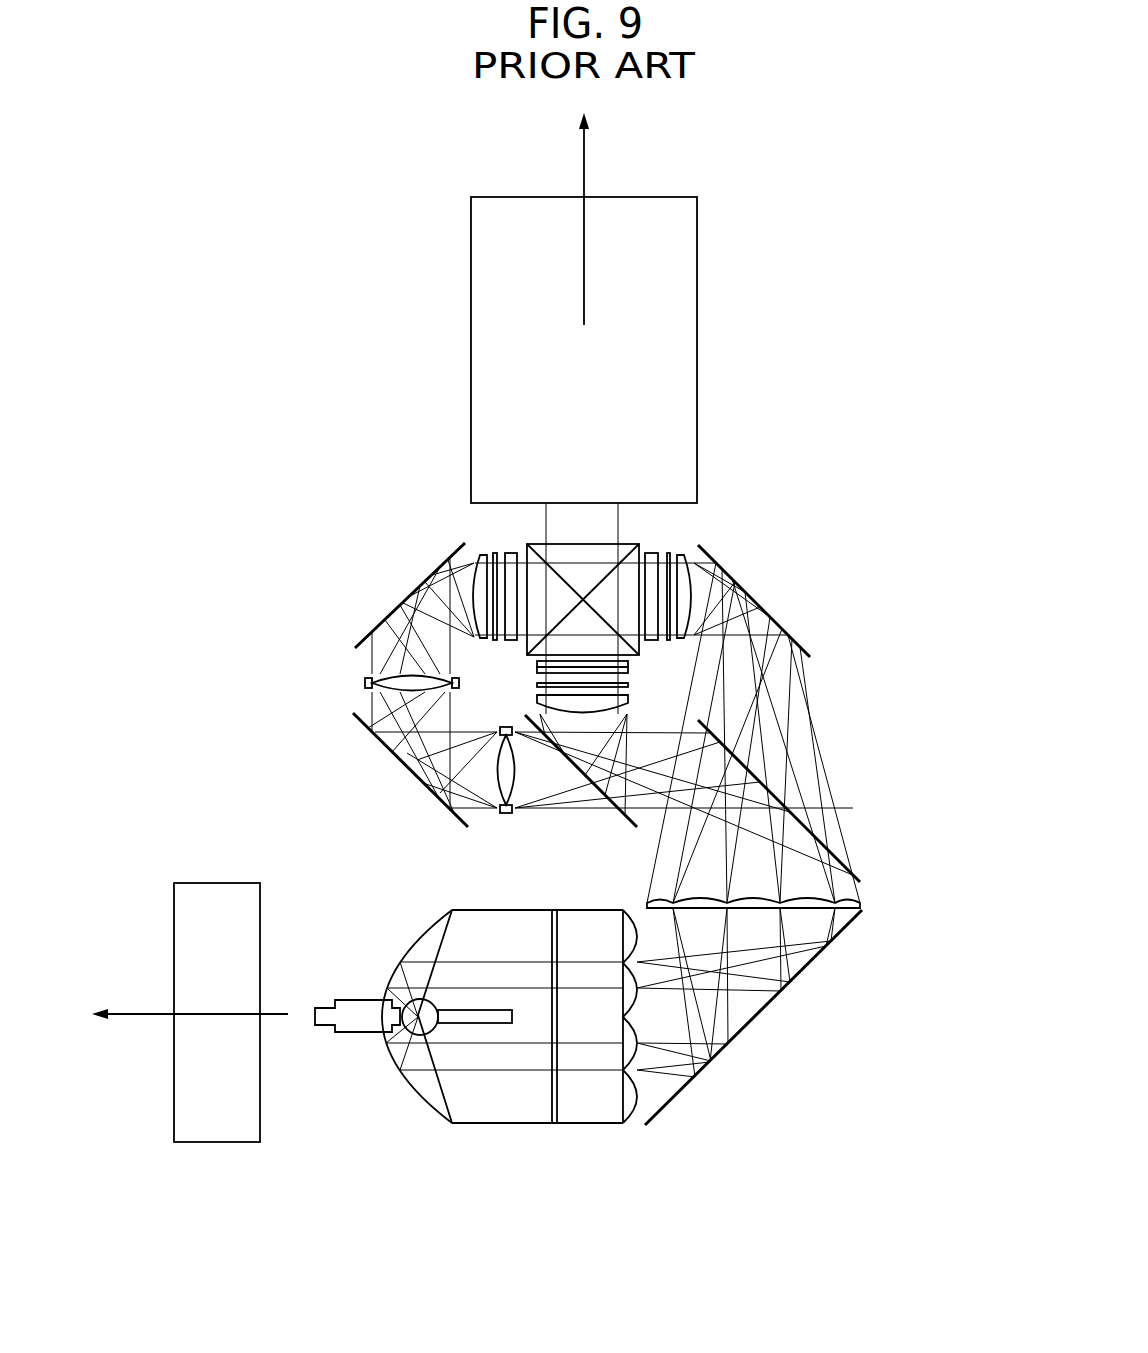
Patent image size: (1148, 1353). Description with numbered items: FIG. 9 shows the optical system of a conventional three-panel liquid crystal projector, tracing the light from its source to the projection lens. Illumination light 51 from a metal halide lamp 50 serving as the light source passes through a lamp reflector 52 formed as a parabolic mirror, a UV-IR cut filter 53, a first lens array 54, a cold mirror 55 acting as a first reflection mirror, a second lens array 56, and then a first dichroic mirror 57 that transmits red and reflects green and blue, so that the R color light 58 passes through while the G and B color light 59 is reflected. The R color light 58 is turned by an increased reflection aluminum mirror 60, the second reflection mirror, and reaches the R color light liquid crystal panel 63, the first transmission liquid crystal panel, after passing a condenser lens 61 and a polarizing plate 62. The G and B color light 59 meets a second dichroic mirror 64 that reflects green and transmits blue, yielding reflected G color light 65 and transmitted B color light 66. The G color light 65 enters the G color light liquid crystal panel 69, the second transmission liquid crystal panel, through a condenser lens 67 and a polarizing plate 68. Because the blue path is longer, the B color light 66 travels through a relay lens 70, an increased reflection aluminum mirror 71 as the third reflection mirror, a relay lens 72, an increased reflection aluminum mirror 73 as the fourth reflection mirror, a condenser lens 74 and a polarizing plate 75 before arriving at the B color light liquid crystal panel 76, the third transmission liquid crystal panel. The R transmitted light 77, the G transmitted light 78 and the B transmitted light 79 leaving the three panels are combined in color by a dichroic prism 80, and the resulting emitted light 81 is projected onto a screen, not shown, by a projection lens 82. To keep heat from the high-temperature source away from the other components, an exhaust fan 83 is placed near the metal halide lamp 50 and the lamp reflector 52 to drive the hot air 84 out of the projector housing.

The metal halide lamp 50 is at (402, 1045).
The illumination light 51 is at (389, 977).
The lamp reflector 52 is at (422, 933).
The UV-IR cut filter 53 is at (551, 1092).
The first lens array 54 is at (623, 1126).
The cold mirror 55 is at (757, 1015).
The second lens array 56 is at (862, 906).
The first dichroic mirror 57 is at (853, 873).
The R color light 58 is at (796, 697).
The G and B color light 59 is at (660, 830).
The increased reflection aluminum mirror 60 is at (756, 596).
The condenser lens 61 is at (687, 553).
The polarizing plate 62 is at (670, 553).
The R color light liquid crystal panel 63 is at (655, 553).
The second dichroic mirror 64 is at (630, 822).
The G color light 65 is at (630, 712).
The B color light 66 is at (547, 812).
The condenser lens 67 is at (628, 686).
The polarizing plate 68 is at (538, 685).
The G color light liquid crystal panel 69 is at (628, 668).
The relay lens 70 is at (503, 815).
The increased reflection aluminum mirror 71 is at (415, 777).
The relay lens 72 is at (366, 683).
The increased reflection aluminum mirror 73 is at (412, 593).
The condenser lens 74 is at (478, 555).
The polarizing plate 75 is at (495, 553).
The B color light liquid crystal panel 76 is at (512, 553).
The R transmitted light 77 is at (639, 548).
The G transmitted light 78 is at (538, 662).
The B transmitted light 79 is at (528, 548).
The dichroic prism 80 is at (584, 555).
The emitted light 81 is at (585, 168).
The projection lens 82 is at (471, 262).
The exhaust fan 83 is at (218, 883).
The hot air 84 is at (140, 1016).